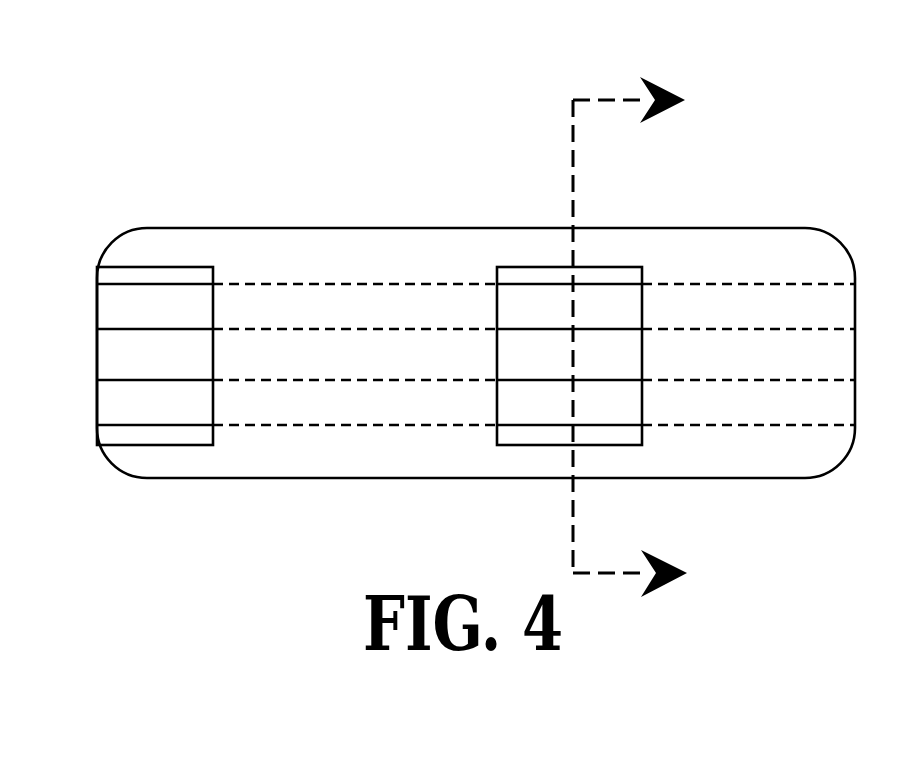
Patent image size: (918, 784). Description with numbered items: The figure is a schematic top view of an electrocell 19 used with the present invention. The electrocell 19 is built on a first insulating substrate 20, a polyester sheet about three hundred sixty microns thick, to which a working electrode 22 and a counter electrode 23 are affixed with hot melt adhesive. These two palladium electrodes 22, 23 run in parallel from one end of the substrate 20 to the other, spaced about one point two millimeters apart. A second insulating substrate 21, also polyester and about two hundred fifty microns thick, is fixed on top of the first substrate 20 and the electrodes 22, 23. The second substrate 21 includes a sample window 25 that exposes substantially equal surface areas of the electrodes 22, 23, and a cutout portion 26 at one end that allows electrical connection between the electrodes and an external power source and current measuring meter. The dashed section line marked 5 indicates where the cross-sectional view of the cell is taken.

The electrocell 19 is at (436, 243).
The second insulating substrate 21 is at (363, 262).
The cutout portion 26 is at (194, 273).
The sample window 25 is at (620, 273).
The working electrode 22 is at (123, 308).
The first insulating substrate 20 is at (123, 357).
The counter electrode 23 is at (123, 406).
The section line 5- 5 is at (643, 337).